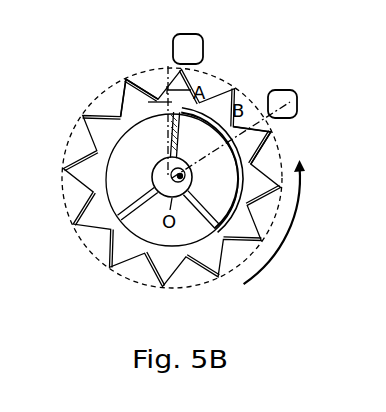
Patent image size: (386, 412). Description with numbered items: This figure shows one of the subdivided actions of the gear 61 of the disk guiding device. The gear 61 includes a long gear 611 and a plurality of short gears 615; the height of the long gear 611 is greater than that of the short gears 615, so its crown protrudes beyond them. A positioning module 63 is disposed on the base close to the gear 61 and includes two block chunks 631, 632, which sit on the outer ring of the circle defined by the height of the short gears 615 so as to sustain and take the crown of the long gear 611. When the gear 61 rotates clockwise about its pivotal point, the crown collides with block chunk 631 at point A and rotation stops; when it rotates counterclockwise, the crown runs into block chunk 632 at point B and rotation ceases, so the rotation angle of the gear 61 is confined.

The gear 61 is at (66, 254).
The long gear 611 is at (285, 128).
The short gears 615 is at (129, 80).
The positioning module 63 is at (263, 63).
The block chunk 631 is at (203, 42).
The block chunk 632 is at (282, 90).